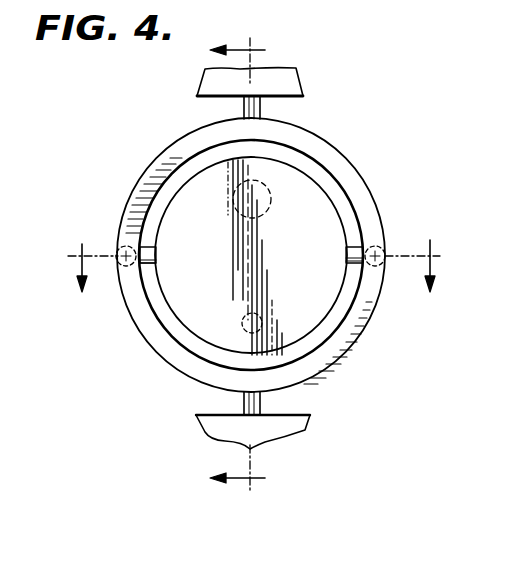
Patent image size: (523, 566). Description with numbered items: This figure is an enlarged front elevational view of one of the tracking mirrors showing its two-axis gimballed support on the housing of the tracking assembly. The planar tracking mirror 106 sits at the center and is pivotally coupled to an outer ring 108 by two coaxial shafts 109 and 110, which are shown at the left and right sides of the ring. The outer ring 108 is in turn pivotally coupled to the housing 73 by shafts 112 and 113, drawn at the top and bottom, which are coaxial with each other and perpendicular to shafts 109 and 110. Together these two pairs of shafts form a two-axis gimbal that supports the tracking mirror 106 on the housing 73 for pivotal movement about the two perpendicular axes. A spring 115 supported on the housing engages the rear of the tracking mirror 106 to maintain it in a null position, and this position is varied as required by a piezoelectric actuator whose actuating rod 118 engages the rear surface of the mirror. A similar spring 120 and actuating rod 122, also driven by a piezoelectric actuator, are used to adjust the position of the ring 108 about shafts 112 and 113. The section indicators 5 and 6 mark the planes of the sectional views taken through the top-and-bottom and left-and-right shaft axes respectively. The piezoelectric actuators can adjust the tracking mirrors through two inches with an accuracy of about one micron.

The section line 5- 5 is at (231, 267).
The section line 6- 6 is at (253, 284).
The housing 73 is at (293, 82).
The tracking mirror 106 is at (328, 199).
The outer ring 108 is at (348, 357).
The shaft 109 is at (152, 263).
The shaft 110 is at (356, 266).
The shaft 112 is at (242, 100).
The shaft 113 is at (242, 405).
The spring 115 is at (273, 210).
The actuating rod 118 is at (243, 317).
The spring 120 is at (120, 245).
The actuating rod 122 is at (380, 246).